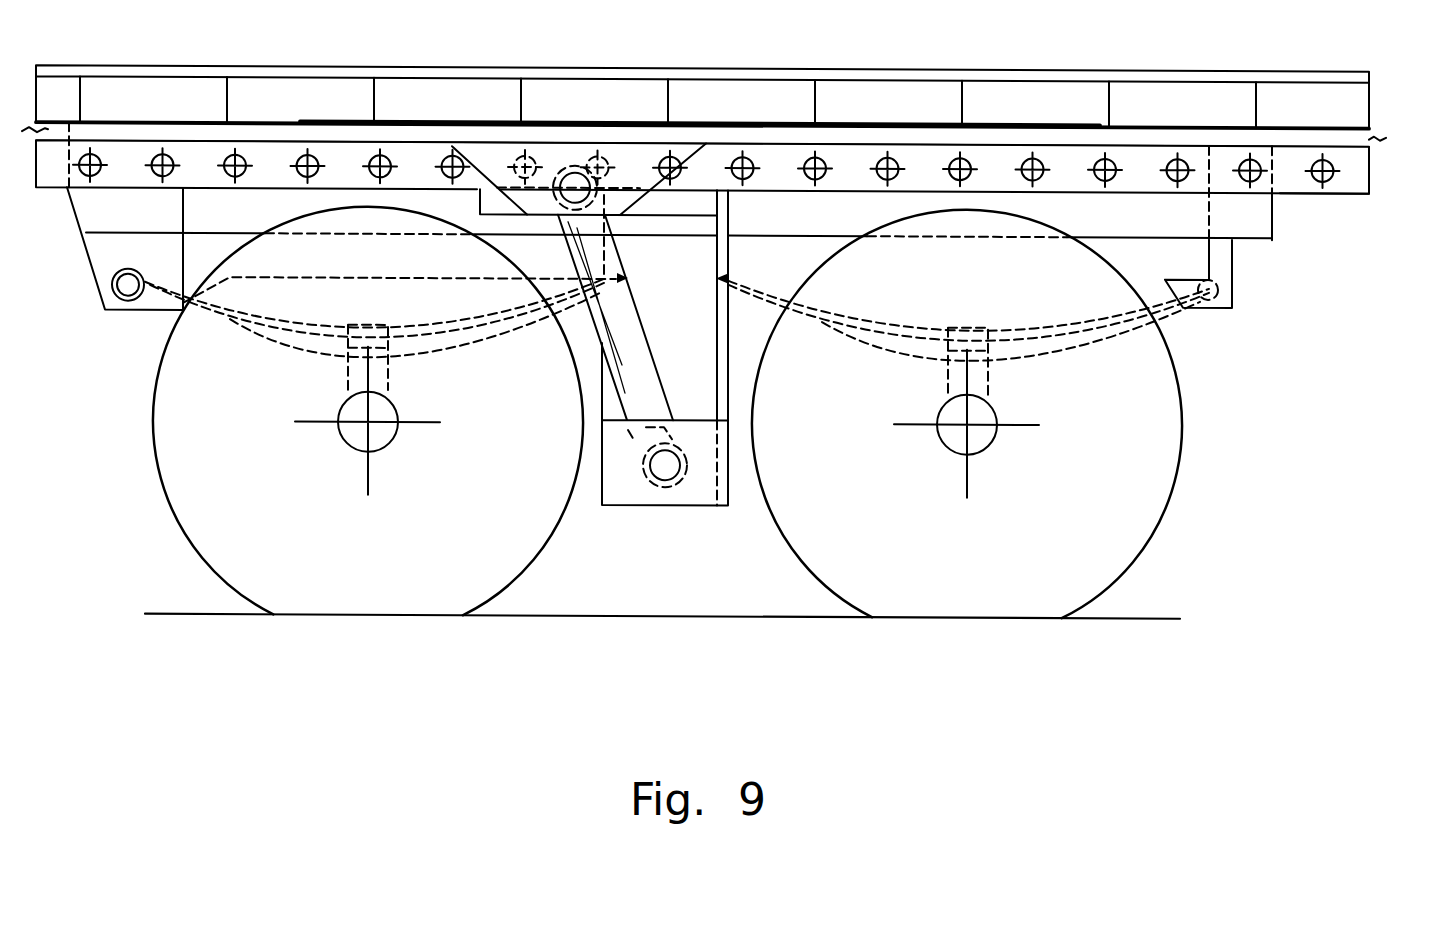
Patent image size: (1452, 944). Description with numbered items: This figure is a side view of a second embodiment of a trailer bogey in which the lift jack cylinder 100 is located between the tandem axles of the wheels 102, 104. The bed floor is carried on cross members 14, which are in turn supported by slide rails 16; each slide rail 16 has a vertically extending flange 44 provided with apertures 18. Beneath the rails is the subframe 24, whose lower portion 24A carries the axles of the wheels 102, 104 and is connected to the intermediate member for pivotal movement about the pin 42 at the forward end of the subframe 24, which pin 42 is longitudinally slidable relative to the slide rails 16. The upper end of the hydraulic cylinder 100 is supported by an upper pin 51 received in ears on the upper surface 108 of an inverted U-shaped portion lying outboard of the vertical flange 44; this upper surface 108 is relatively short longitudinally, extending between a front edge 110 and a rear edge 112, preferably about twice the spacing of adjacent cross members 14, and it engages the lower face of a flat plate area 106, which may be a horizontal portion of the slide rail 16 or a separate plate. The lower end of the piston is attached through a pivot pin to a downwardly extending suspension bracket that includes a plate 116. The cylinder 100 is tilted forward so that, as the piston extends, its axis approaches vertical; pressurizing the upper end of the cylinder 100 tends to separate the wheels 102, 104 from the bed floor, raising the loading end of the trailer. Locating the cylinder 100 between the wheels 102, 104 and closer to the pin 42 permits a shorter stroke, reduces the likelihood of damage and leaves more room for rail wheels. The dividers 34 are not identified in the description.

The cross members 14 is at (1157, 65).
The spacer dividers 34 is at (227, 90).
The flat plate area 106 is at (845, 128).
The slide rails 16 is at (773, 158).
The apertures 18 is at (1167, 156).
The vertical flange 44 is at (1290, 181).
The lower portion 24A is at (757, 244).
The pin 42 is at (128, 296).
The rear edge 112 is at (706, 140).
The front edge 110 is at (456, 150).
The upper surface 108 is at (648, 140).
The upper pin 51 is at (565, 170).
The hydraulic cylinder 100 is at (625, 310).
The plate 116 is at (707, 344).
The subframe 24 is at (1217, 262).
The wheels 102 is at (502, 562).
The wheels 104 is at (1103, 564).